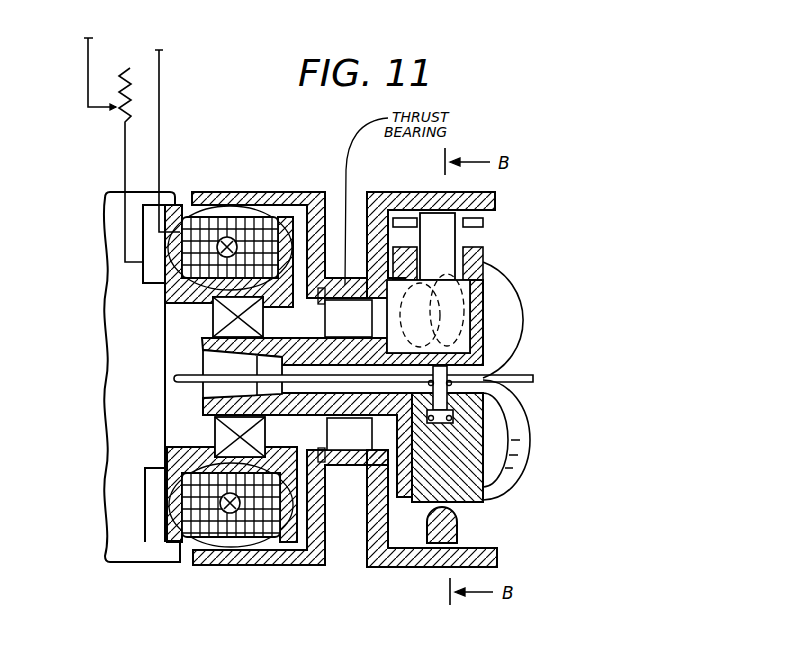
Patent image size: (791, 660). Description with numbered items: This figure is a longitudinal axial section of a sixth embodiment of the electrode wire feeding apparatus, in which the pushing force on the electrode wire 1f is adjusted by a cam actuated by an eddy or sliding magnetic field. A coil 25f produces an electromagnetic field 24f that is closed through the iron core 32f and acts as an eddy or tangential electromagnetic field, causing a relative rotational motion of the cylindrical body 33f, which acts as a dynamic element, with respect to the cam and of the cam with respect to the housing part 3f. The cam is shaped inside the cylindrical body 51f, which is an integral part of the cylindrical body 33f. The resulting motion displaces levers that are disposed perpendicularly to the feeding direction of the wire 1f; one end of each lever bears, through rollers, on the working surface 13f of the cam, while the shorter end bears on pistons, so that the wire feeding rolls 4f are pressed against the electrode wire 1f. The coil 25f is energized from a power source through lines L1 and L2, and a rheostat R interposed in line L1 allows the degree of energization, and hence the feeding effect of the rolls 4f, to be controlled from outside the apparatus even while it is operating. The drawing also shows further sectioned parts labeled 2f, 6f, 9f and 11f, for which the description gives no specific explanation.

The electrode wire 1f is at (533, 378).
The housing 2f is at (118, 405).
The housing part 3f is at (310, 397).
The wire feeding rolls 4f is at (517, 320).
The bushing 6f is at (213, 363).
The spring plate 9f is at (473, 237).
The screw 11f is at (458, 413).
The working surface 13f is at (455, 282).
The electromagnetic field 24f is at (189, 208).
The coil 25f is at (233, 222).
The iron core 32f is at (166, 297).
The cylindrical body 33f is at (300, 188).
The cylindrical body 51f is at (402, 562).
The line L1 is at (88, 74).
The line L2 is at (162, 98).
The rheostat R is at (122, 123).